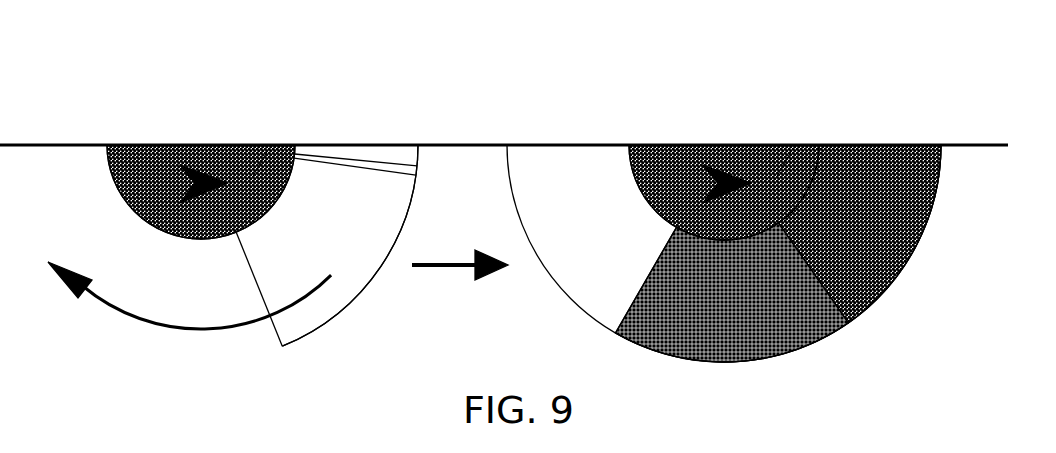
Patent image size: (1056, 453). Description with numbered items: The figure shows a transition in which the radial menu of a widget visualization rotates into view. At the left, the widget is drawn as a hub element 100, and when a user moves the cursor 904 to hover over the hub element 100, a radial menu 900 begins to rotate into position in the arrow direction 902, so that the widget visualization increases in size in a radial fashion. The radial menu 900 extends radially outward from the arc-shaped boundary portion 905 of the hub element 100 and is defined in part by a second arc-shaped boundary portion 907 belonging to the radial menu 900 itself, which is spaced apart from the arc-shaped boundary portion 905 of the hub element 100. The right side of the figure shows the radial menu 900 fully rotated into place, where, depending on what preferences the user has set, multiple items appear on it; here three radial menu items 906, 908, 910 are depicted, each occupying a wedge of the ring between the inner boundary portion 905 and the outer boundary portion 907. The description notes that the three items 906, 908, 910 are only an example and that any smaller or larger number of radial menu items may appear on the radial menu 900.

The hub element 100 is at (143, 148).
The radial menu element 900 is at (386, 302).
The arrow direction 902 is at (137, 318).
The cursor 904 is at (273, 147).
The arc-shaped boundary portion of the hub element 905 is at (112, 178).
The radial menu item 906 is at (588, 282).
The arc-shaped boundary portion of the radial menu element 907 is at (330, 318).
The radial menu item 908 is at (758, 327).
The radial menu item 910 is at (933, 190).